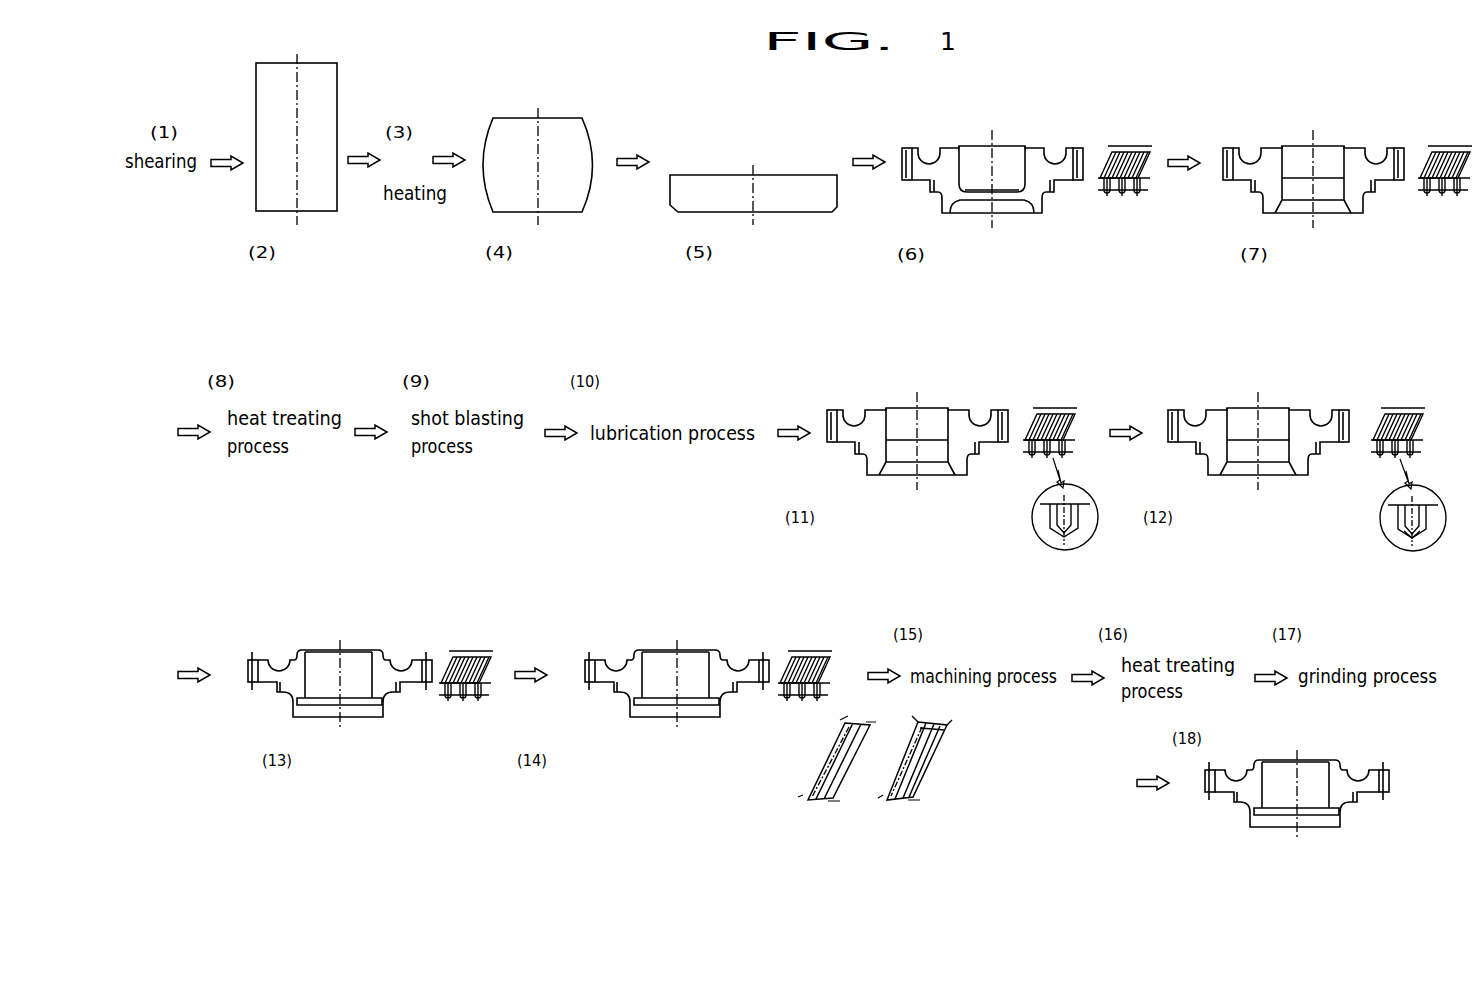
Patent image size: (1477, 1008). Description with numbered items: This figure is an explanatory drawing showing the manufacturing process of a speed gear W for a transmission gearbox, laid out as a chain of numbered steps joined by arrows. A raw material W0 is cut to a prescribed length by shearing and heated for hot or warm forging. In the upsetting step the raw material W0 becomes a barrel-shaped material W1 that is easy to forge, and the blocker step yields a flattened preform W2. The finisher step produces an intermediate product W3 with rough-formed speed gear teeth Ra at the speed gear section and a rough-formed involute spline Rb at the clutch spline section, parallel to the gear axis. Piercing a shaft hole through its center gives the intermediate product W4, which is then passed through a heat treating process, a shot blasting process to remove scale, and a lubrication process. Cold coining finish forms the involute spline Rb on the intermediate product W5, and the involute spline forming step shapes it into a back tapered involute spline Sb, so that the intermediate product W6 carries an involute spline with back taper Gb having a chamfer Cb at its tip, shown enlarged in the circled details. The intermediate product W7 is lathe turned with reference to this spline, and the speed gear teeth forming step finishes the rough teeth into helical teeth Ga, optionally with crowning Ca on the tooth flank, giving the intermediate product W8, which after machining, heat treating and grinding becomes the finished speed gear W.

The raw material W0 is at (334, 99).
The material W1 is at (581, 137).
The upset preform W2 is at (797, 180).
The intermediate product W3 is at (1053, 150).
The intermediate product W4 is at (1367, 150).
The heat treated hub blank W5 is at (975, 412).
The intermediate product W6 is at (1312, 412).
The intermediate product W7 is at (392, 660).
The intermediate product W8 is at (733, 660).
The speed gear W is at (1357, 768).
The rough-formed speed gear teeth Ra is at (1113, 155).
The rough-formed involute spline Rb is at (1137, 196).
The involute spline Sb is at (1073, 530).
The involute spline with back taper Gb is at (1400, 522).
The chamfer Cb is at (1408, 536).
The helical teeth Ga is at (845, 768).
The crowning Ca is at (942, 738).